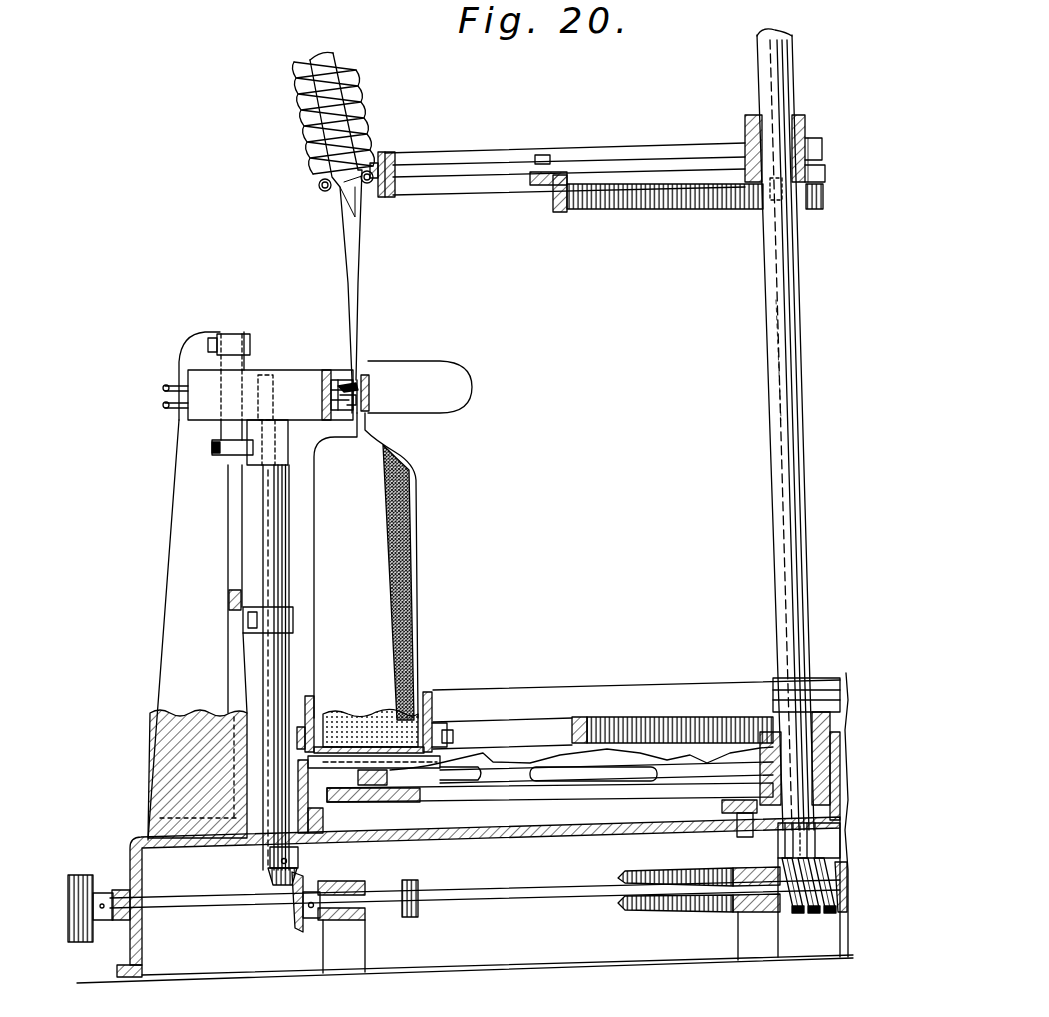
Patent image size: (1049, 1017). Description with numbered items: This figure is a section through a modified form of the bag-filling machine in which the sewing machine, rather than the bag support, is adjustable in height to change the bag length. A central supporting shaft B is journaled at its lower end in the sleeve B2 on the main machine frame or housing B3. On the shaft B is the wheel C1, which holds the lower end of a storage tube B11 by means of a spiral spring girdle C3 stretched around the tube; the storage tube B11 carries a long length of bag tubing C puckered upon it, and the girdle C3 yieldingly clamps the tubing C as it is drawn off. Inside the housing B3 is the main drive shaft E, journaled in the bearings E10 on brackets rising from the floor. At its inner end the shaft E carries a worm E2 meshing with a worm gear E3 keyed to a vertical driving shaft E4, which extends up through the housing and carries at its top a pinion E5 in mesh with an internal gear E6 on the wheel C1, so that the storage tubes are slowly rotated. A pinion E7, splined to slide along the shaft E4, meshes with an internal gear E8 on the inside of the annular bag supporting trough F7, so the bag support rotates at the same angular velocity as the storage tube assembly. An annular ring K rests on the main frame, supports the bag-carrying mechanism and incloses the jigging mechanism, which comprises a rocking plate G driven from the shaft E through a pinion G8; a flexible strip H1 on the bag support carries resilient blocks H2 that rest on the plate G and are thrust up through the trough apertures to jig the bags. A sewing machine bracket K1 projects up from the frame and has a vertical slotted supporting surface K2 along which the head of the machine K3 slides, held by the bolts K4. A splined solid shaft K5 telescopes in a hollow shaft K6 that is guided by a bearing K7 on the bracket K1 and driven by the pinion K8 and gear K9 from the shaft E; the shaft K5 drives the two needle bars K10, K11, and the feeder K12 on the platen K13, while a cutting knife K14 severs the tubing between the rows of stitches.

The central supporting shaft B is at (773, 410).
The sleeve B2 is at (770, 745).
The main machine frame or housing B3 is at (135, 850).
The storage tube B11 is at (318, 68).
The bag tubing C is at (300, 128).
The wheel C1 is at (466, 165).
The spiral spring girdle C3 is at (319, 185).
The main drive shaft E is at (200, 908).
The worm E2 is at (826, 914).
The worm gear E3 is at (640, 908).
The vertical driving shaft E4 is at (783, 340).
The pinion E5 is at (750, 205).
The internal gear E6 is at (630, 208).
The pinion E7 is at (775, 700).
The internal gear E8 is at (630, 717).
The bearings E10 is at (352, 920).
The annular bag supporting trough F7 is at (456, 706).
The jigging plate G is at (398, 803).
The pinion G8 is at (418, 915).
The flexible strip H1 is at (683, 766).
The resilient blocks H2 is at (368, 786).
The annular ring K is at (303, 800).
The sewing machine bracket K1 is at (168, 606).
The vertical slotted supporting surface K2 is at (243, 518).
The head of the machine K3 is at (258, 417).
The bolts K4 is at (250, 345).
The splined solid shaft K5 is at (263, 546).
The hollow shaft K6 is at (266, 675).
The bearing K7 is at (296, 616).
The pinion K8 is at (277, 884).
The gear K9 is at (298, 927).
The needle bar K10 is at (352, 415).
The needle bar K11 is at (348, 380).
The feeder K12 is at (368, 388).
The platen K13 is at (380, 404).
The cutting knife K14 is at (345, 383).